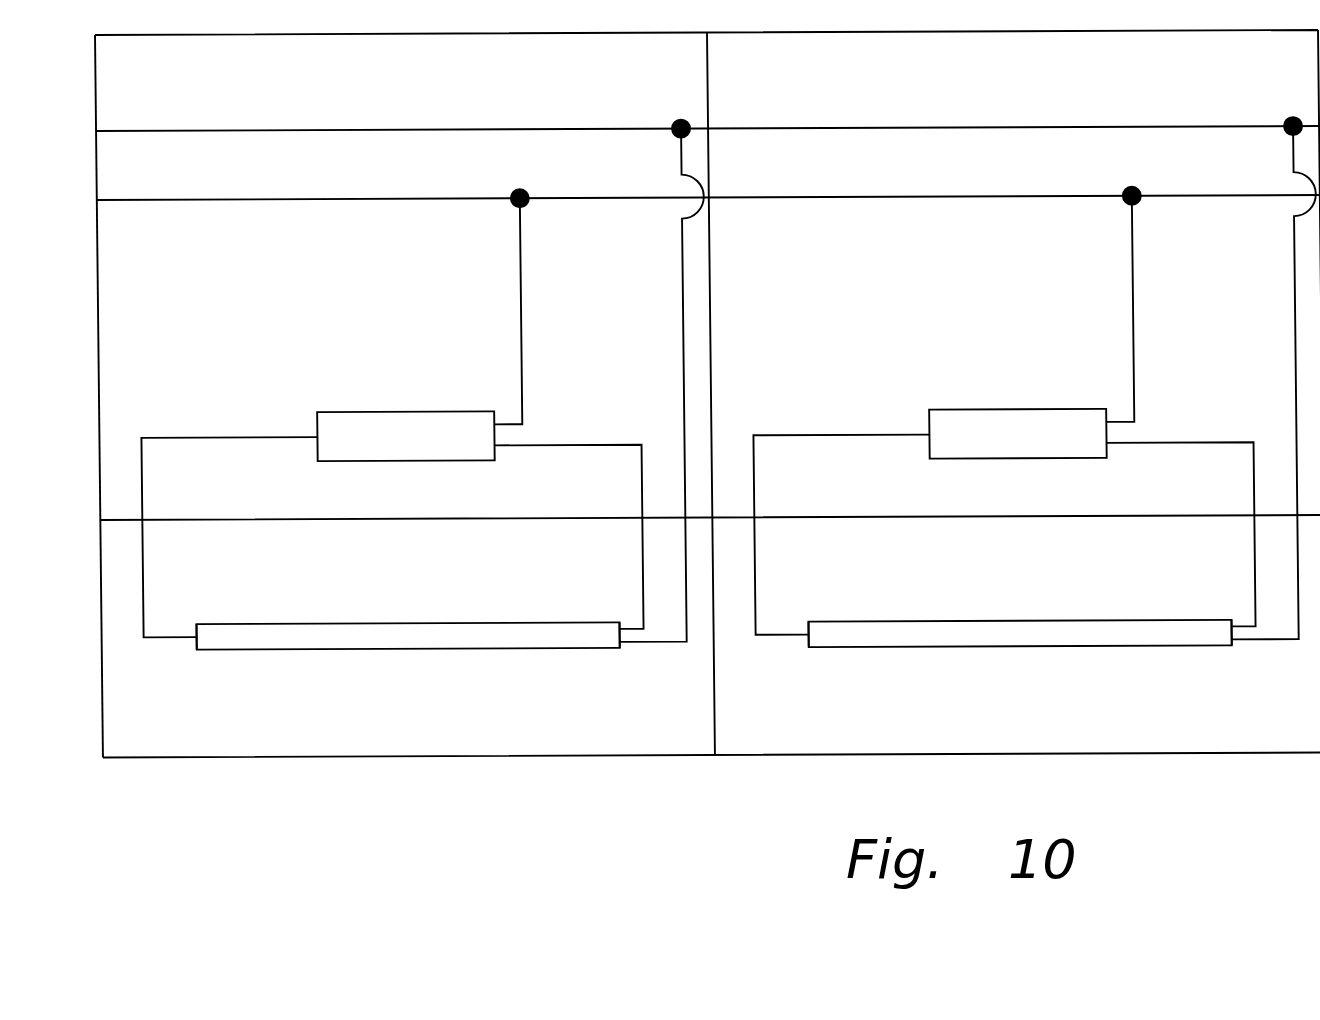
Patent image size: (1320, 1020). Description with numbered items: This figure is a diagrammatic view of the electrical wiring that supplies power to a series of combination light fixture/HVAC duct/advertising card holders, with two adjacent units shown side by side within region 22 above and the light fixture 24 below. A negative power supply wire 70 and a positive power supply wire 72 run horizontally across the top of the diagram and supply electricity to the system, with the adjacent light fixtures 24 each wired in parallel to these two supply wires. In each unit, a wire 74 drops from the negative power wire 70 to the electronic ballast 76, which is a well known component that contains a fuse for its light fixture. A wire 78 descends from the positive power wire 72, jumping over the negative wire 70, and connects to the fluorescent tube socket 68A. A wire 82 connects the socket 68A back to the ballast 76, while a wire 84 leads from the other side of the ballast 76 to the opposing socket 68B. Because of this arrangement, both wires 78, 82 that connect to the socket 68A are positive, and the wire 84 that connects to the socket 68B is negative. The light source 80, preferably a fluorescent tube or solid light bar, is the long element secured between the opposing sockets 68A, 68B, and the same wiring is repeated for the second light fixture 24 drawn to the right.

The first layer 22 is at (160, 326).
The light fixture 24 is at (149, 736).
The fluorescent tube socket 68A is at (615, 650).
The fluorescent tube socket 68B is at (190, 650).
The negative power supply wire 70 is at (270, 200).
The positive power supply wire 72 is at (457, 131).
The wire 74 is at (518, 361).
The electronic ballast 76 is at (402, 449).
The wire 78 is at (680, 365).
The light source 80 is at (398, 639).
The wire 82 is at (637, 568).
The wire 84 is at (137, 578).